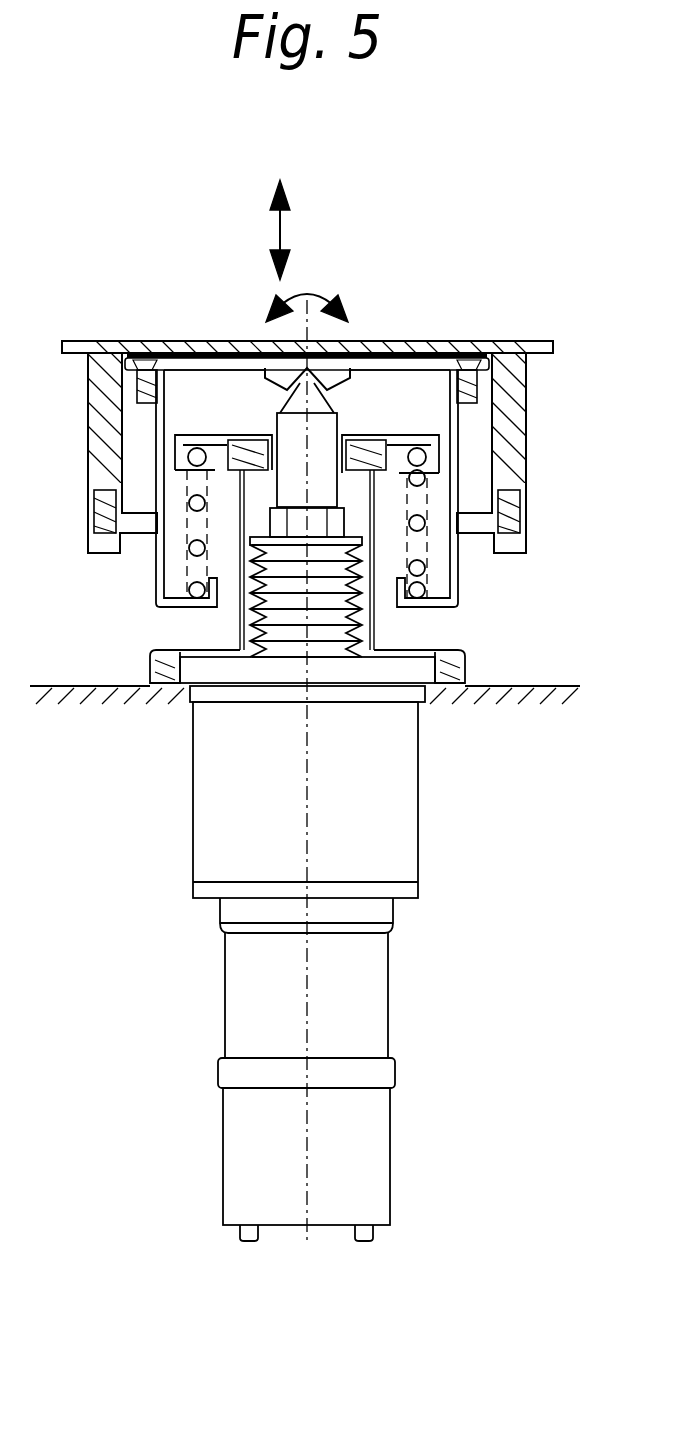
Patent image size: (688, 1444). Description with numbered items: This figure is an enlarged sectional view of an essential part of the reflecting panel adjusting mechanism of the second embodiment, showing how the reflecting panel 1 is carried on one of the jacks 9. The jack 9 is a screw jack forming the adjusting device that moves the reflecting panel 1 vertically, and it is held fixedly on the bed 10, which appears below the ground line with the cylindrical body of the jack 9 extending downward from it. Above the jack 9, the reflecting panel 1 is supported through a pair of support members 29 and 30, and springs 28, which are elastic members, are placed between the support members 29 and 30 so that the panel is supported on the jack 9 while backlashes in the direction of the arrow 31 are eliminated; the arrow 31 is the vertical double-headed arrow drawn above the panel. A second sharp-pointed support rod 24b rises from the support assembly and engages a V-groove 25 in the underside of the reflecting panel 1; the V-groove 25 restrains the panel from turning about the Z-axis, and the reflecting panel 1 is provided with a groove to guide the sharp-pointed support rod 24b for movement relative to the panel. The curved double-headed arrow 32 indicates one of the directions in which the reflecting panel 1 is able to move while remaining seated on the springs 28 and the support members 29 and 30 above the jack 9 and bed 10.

The reflecting panel 1 is at (73, 341).
The jack 9 is at (420, 855).
The bed 10 is at (477, 737).
The second sharp-pointed support rod 24b is at (273, 427).
The V-groove 25 is at (333, 368).
The spring 28 is at (440, 472).
The support member 29 is at (460, 592).
The support member 30 is at (400, 437).
The arrow 31 is at (278, 230).
The arrow 32 is at (317, 290).